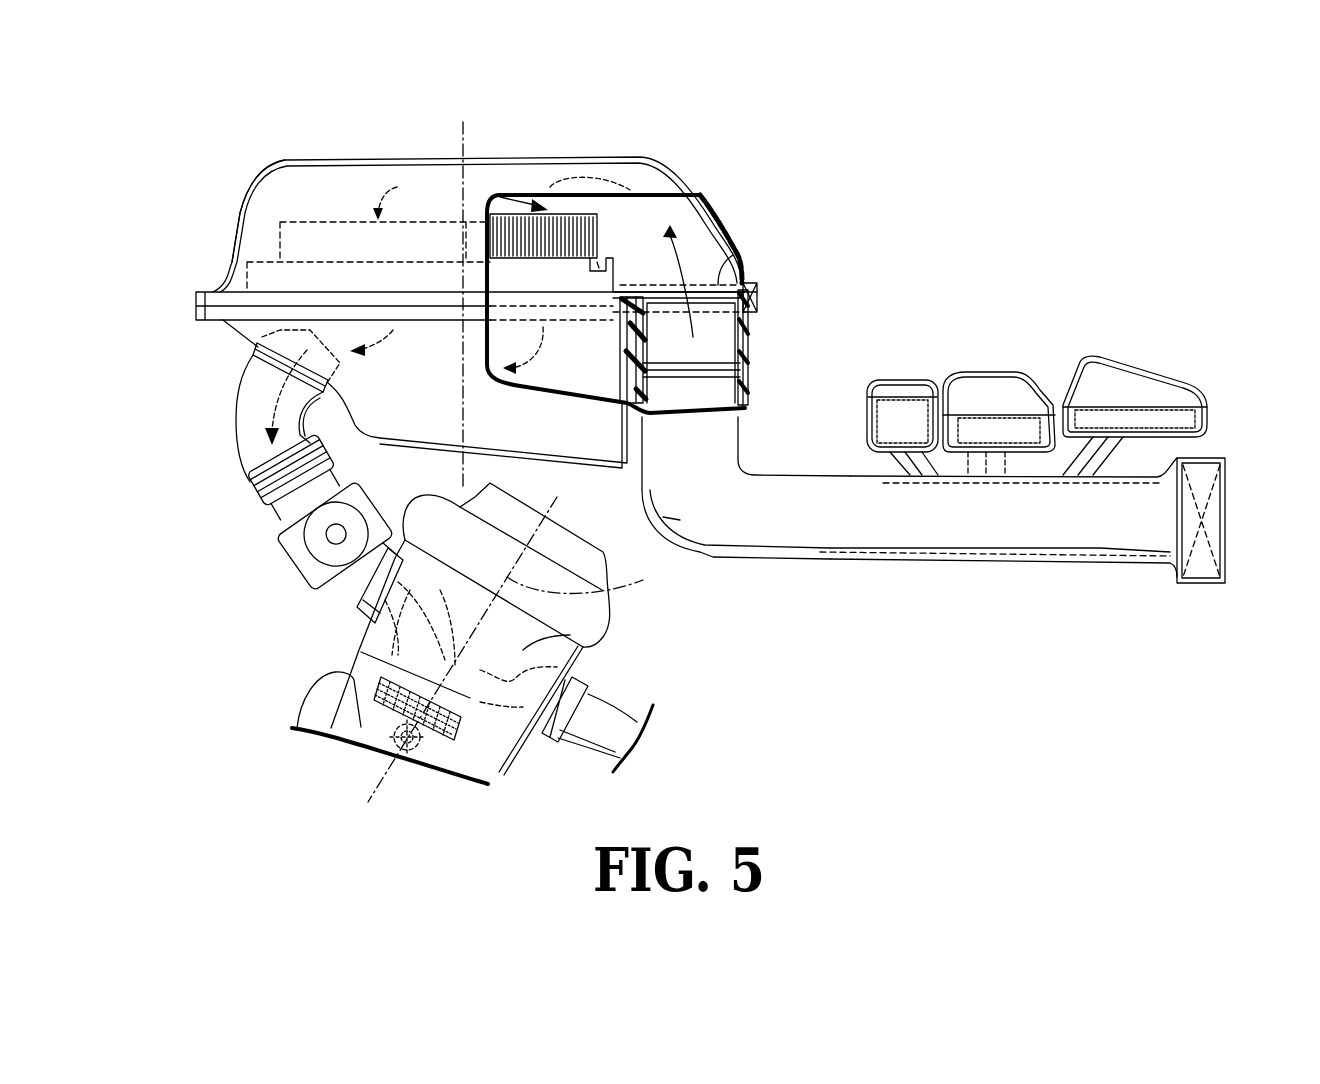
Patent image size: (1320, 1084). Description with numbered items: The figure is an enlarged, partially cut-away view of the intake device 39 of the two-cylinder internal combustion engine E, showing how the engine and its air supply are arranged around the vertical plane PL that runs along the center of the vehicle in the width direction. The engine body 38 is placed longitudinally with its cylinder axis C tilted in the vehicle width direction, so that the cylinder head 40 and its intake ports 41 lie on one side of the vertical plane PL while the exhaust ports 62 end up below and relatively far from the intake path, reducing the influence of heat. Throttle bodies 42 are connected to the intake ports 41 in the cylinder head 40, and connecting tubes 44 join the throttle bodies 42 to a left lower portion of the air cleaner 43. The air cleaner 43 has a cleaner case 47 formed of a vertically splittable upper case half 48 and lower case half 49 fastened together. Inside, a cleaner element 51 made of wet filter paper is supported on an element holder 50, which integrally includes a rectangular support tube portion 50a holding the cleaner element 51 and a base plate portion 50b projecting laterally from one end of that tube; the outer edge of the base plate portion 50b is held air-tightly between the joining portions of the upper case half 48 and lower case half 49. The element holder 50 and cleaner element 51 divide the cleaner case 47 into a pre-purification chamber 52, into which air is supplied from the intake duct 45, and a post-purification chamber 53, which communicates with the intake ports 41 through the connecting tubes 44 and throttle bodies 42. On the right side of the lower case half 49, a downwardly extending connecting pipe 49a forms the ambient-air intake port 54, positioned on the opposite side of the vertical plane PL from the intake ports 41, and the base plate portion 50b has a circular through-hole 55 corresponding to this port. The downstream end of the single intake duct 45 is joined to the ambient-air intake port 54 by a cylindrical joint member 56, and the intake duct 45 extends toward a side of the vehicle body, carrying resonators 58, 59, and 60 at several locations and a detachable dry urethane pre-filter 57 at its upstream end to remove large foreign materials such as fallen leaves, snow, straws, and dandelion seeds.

The engine body 38 is at (500, 768).
The intake device 39 is at (719, 570).
The cylinder head 40 is at (613, 633).
The intake ports 41 is at (410, 590).
The throttle bodies 42 is at (315, 580).
The air cleaner 43 is at (649, 148).
The connecting tubes 44 is at (248, 452).
The intake duct 45 is at (823, 542).
The cleaner case 47 is at (330, 125).
The upper case half 48 is at (237, 195).
The lower case half 49 is at (327, 335).
The connecting pipe 49a is at (745, 328).
The element holder 50 is at (626, 247).
The support tube portion 50a is at (592, 255).
The base plate portion 50b is at (735, 255).
The cleaner element 51 is at (514, 213).
The pre-purification chamber 52 is at (700, 237).
The post-purification chamber 53 is at (562, 378).
The ambient-air intake port 54 is at (740, 322).
The through-hole 55 is at (665, 300).
The joint member 56 is at (627, 368).
The pre-filter 57 is at (1185, 582).
The resonator 58 is at (893, 387).
The resonator 59 is at (992, 382).
The resonator 60 is at (1140, 375).
The exhaust ports 62 is at (577, 668).
The vertical plane PL is at (462, 125).
The cylinder axis C is at (514, 649).
The internal combustion engine E is at (298, 690).